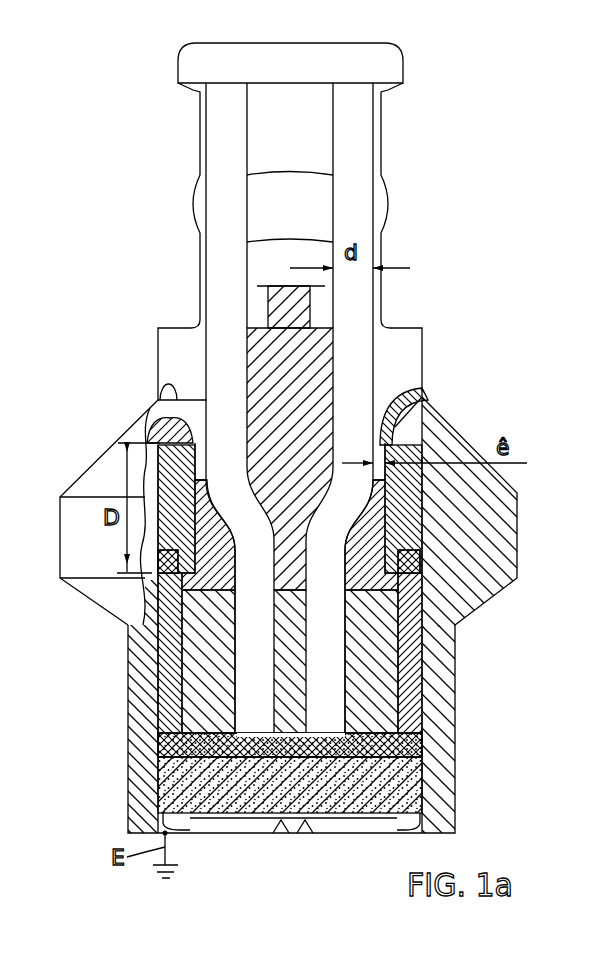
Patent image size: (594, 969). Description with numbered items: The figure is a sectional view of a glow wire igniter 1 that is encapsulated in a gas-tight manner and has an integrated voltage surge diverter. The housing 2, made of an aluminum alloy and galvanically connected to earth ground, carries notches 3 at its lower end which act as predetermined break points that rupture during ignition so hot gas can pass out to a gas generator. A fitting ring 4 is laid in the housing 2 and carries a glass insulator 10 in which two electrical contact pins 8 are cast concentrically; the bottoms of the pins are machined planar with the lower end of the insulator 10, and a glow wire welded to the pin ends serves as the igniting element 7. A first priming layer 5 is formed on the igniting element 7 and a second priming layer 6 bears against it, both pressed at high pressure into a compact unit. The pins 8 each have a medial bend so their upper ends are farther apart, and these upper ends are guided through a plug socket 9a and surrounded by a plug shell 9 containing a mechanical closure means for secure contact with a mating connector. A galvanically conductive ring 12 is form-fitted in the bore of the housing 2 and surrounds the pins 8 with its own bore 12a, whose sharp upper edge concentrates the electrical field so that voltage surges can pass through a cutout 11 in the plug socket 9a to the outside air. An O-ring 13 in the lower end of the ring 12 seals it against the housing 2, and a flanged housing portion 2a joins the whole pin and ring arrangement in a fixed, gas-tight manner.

The glow wire igniter 1 is at (138, 353).
The housing 2 is at (102, 452).
The flanged housing portion 2a is at (408, 437).
The notches 3 is at (255, 837).
The fitting ring 4 is at (407, 688).
The first priming layer 5 is at (425, 738).
The second priming layer 6 is at (402, 792).
The igniting element 7 is at (313, 737).
The contact pins 8 is at (220, 127).
The plug shell 9 is at (383, 66).
The plug socket 9a is at (305, 303).
The glass insulator 10 is at (200, 685).
The cutout 11 is at (200, 417).
The galvanically conductive ring 12 is at (425, 523).
The bore 12a is at (420, 385).
The O-ring 13 is at (425, 568).